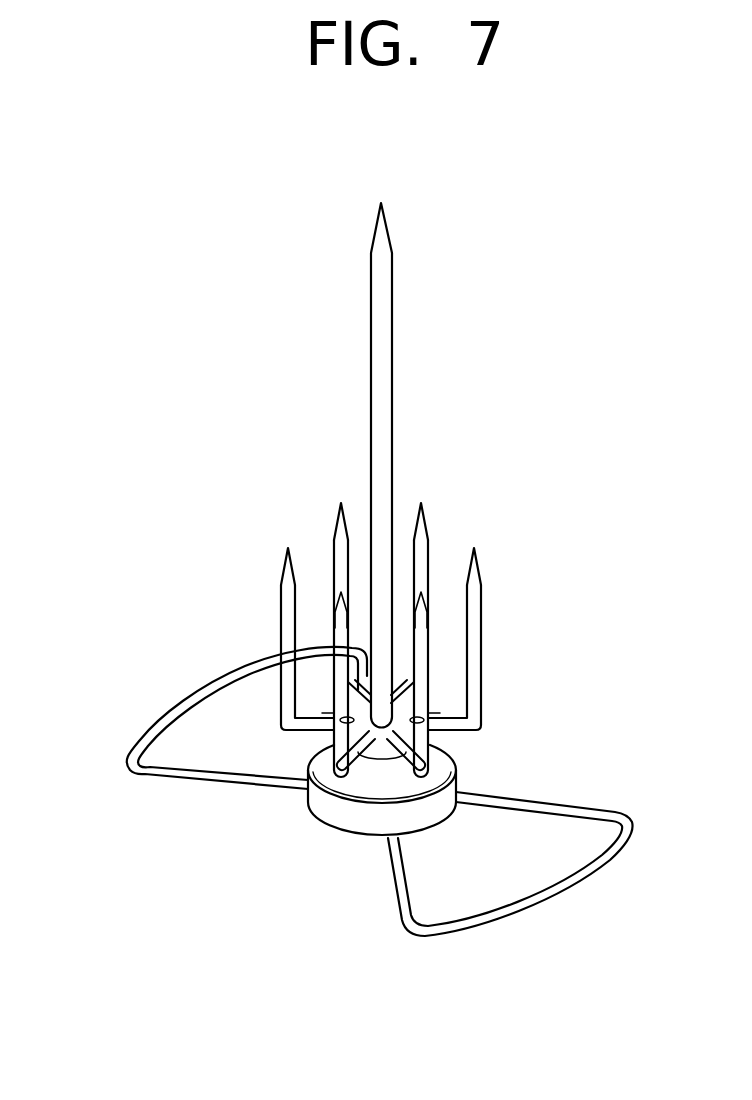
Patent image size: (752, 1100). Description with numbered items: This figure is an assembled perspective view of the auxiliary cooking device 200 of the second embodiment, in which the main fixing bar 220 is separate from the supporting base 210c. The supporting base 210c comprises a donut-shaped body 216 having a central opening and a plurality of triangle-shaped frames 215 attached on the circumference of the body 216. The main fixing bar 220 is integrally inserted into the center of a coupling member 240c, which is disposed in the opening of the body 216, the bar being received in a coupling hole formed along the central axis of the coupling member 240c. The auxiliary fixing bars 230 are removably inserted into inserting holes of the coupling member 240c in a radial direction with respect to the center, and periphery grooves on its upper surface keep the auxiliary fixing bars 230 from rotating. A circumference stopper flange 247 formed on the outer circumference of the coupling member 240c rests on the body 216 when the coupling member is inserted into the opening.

The auxiliary cooking device 200 is at (256, 471).
The main fixing bar 220 is at (393, 458).
The auxiliary fixing bars 230 is at (423, 577).
The circumference stopper flange 247 is at (456, 783).
The hub 240c is at (375, 775).
The donut-shaped body 216 is at (365, 827).
The triangle-shaped frames 215 is at (397, 907).
The base member 210c is at (193, 880).